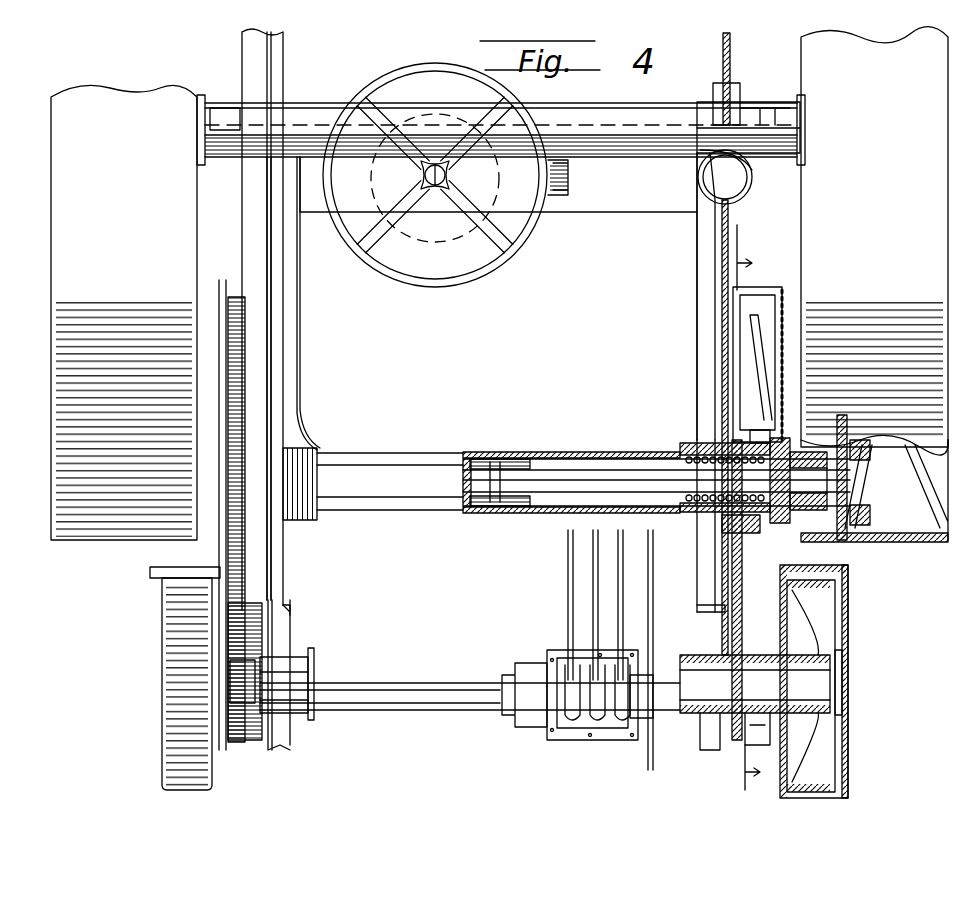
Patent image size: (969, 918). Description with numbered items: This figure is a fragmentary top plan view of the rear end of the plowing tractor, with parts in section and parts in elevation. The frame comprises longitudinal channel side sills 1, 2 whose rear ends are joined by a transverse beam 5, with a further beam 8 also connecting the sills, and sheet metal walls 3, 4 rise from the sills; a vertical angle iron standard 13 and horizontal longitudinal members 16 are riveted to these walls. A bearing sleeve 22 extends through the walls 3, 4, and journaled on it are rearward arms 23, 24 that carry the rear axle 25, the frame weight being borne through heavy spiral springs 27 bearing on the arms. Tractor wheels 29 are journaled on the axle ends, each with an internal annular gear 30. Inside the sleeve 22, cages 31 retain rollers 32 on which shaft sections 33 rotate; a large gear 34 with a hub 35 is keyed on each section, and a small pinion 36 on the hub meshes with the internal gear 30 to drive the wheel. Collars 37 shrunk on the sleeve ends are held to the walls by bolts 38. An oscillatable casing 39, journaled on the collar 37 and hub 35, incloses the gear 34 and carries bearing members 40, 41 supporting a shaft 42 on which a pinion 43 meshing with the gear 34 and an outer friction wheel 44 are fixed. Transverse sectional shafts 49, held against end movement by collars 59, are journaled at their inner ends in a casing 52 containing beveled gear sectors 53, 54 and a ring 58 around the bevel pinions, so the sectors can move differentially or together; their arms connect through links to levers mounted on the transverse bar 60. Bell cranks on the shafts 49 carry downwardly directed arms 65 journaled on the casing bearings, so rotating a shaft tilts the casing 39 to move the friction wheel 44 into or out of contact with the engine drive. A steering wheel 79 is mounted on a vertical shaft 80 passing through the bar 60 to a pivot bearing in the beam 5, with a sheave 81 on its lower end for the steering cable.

The longitudinal channel side sill 1 is at (279, 675).
The longitudinal channel side sill 2 is at (715, 585).
The sheet metal wall 3 is at (310, 557).
The sheet metal wall 4 is at (680, 378).
The transverse beam 5 is at (498, 296).
The beam 8 is at (751, 514).
The vertical angle iron standard 13 is at (678, 600).
The horizontal longitudinal member 16 is at (283, 70).
The bearing sleeve 22 is at (507, 445).
The arm 23 is at (300, 350).
The arm 24 is at (697, 272).
The rear axle 25 is at (501, 130).
The spiral spring 27 is at (748, 153).
The tractor wheel 29 is at (499, 283).
The internal annular gear 30 is at (885, 462).
The cage 31 is at (490, 515).
The roller 32 is at (520, 512).
The shaft section 33 is at (600, 498).
The gear 34 is at (770, 375).
The hub 35 is at (770, 435).
The pinion 36 is at (868, 498).
The collar 37 is at (690, 540).
The bolt 38 is at (700, 565).
The oscillatable casing 39 is at (190, 548).
The bearing member 40 is at (692, 655).
The bearing member 41 is at (811, 686).
The shaft 42 is at (711, 731).
The pinion 43 is at (760, 744).
The friction pulley or wheel 44 is at (870, 792).
The sectional shaft 49 is at (420, 680).
The casing 52 is at (580, 740).
The beveled gear sector 53 is at (568, 565).
The beveled gear sector 54 is at (635, 570).
The annular member or ring 58 is at (593, 595).
The collar 59 is at (515, 672).
The transverse bar 60 is at (556, 195).
The downwardly directed arm 65 is at (668, 718).
The steering wheel 79 is at (436, 282).
The vertical shaft 80 is at (435, 186).
The sheave 81 is at (464, 238).